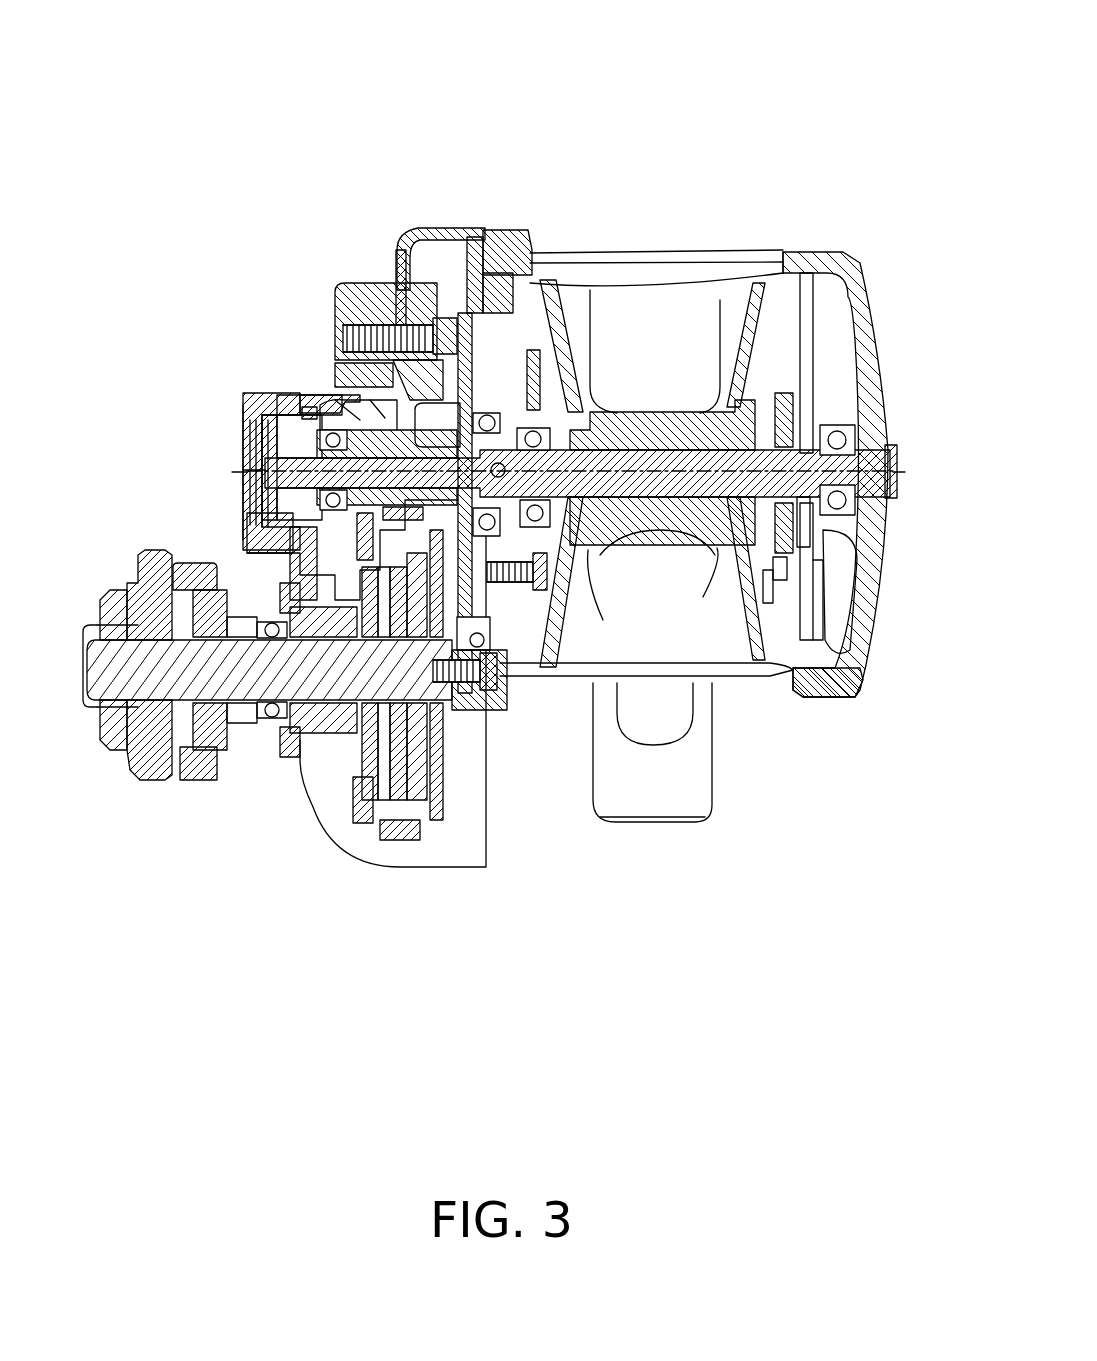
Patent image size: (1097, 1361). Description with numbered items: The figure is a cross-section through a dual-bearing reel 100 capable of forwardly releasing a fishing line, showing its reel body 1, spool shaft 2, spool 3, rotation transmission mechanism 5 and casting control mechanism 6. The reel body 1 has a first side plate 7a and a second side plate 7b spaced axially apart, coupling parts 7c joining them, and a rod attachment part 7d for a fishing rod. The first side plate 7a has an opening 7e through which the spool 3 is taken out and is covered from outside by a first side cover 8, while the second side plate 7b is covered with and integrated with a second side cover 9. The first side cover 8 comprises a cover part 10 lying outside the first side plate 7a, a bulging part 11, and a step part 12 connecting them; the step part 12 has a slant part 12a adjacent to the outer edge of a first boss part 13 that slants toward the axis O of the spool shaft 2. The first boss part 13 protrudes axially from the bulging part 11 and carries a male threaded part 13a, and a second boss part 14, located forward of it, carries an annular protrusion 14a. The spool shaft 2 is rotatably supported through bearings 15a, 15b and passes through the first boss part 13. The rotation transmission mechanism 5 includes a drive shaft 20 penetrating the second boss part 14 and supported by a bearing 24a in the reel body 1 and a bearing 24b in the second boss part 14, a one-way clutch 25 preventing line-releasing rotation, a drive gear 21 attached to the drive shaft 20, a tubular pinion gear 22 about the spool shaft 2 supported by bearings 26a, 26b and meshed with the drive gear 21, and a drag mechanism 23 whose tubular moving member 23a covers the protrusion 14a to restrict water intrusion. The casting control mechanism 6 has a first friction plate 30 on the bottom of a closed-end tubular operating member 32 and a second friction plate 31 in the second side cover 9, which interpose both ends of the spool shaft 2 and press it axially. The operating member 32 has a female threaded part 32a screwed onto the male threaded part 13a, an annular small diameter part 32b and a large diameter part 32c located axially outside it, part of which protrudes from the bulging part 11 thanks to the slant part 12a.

The dual-bearing reel 100 is at (650, 110).
The reel body 1 is at (667, 250).
The spool shaft 2 is at (830, 527).
The spool 3 is at (663, 543).
The rotation transmission mechanism 5 is at (463, 870).
The casting control mechanism 6 is at (236, 494).
The first side plate 7a is at (487, 232).
The second side plate 7b is at (808, 250).
The coupling parts 7c is at (760, 670).
The rod attachment part 7d is at (690, 800).
The opening 7e is at (522, 285).
The first side cover 8 is at (405, 232).
The second side cover 9 is at (878, 330).
The cover part 10 is at (395, 262).
The bulging part 11 is at (377, 857).
The step part 12 is at (353, 395).
The slant part 12a is at (305, 405).
The first boss part 13 is at (283, 420).
The male threaded part 13a is at (247, 540).
The second boss part 14 is at (293, 760).
The protrusion 14a is at (278, 735).
The bearing 15a is at (580, 565).
The bearing 15b is at (850, 437).
The drive shaft 20 is at (140, 760).
The drive gear 21 is at (410, 840).
The pinion gear 22 is at (510, 680).
The drag mechanism 23 is at (227, 763).
The moving member 23a is at (258, 722).
The bearing 24a is at (437, 837).
The bearing 24b is at (138, 590).
The one-way clutch 25 is at (313, 800).
The bearing 26a is at (480, 420).
The bearing 26b is at (500, 433).
The first friction plate 30 is at (247, 478).
The second friction plate 31 is at (860, 477).
The operating member 32 is at (240, 430).
The female threaded part 32a is at (247, 507).
The small diameter part 32b is at (262, 415).
The large diameter part 32c is at (247, 465).
The axis O is at (571, 472).